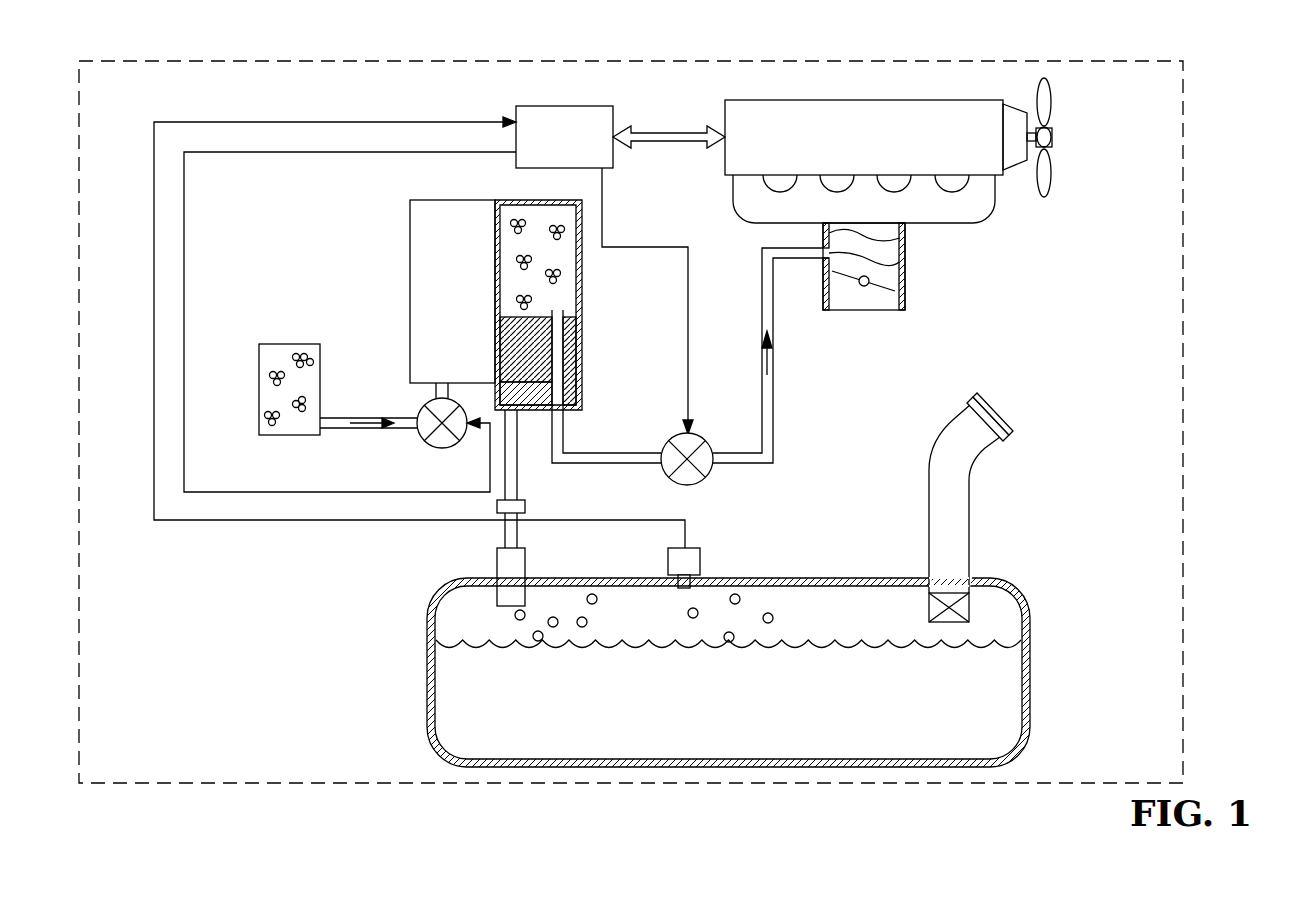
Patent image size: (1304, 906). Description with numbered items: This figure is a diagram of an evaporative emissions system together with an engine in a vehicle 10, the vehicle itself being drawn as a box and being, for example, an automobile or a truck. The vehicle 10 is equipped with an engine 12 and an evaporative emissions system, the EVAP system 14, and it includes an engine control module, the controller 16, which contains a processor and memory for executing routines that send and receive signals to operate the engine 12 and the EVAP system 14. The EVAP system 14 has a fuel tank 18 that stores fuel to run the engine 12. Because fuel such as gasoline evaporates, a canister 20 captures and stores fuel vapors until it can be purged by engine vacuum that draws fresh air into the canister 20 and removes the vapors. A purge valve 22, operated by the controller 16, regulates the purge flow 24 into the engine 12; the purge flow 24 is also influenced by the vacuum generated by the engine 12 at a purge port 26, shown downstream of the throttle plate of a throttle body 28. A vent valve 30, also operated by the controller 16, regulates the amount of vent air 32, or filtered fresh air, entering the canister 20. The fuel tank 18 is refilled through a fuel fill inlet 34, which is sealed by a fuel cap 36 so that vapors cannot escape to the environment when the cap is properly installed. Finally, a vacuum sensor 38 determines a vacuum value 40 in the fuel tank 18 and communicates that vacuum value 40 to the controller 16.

The vehicle 10 is at (1183, 118).
The engine 12 is at (748, 100).
The EVAP system 14 is at (350, 90).
The controller 16 is at (540, 106).
The fuel tank 18 is at (1003, 581).
The canister 20 is at (582, 287).
The purge valve 22 is at (707, 475).
The purge flow 24 is at (771, 355).
The purge port 26 is at (905, 268).
The throttle body 28 is at (880, 312).
The vent valve 30 is at (434, 447).
The vent air 32 is at (372, 418).
The fuel fill inlet 34 is at (990, 455).
The fuel cap 36 is at (995, 412).
The vacuum sensor 38 is at (700, 560).
The vacuum value 40 is at (215, 122).